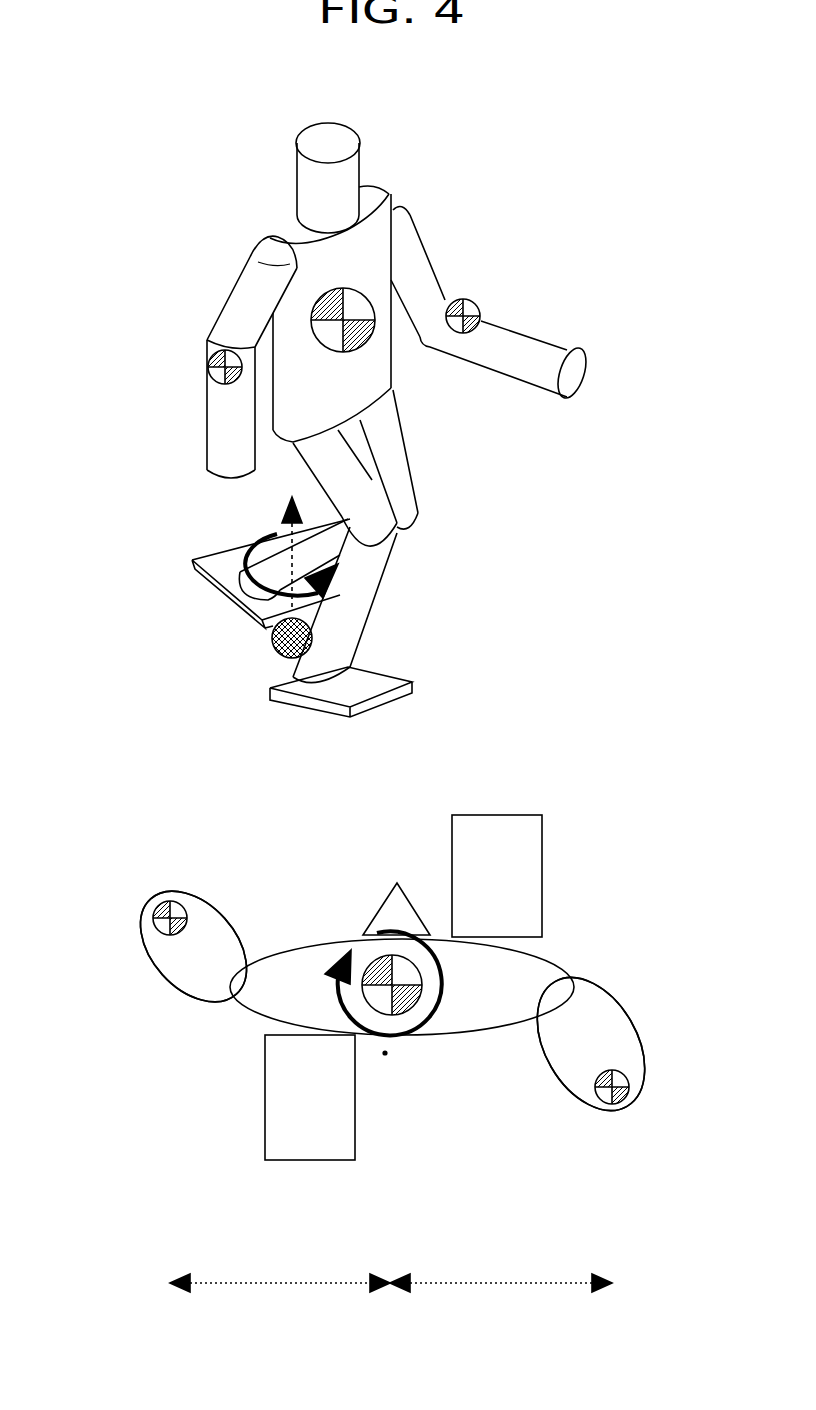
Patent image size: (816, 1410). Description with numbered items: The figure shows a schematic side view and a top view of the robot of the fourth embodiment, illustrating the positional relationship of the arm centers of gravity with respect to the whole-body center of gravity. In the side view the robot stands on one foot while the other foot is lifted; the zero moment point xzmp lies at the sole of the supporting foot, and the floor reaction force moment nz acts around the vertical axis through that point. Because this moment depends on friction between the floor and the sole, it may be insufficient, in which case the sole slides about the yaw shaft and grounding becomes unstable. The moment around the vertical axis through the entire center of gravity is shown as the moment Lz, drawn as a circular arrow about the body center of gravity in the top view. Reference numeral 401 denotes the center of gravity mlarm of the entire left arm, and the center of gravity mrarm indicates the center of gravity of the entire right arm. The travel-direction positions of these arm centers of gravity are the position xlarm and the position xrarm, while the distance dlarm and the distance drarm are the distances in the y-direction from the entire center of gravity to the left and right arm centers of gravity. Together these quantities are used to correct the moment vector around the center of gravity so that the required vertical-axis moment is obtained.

The center of gravity of the entire left arm 401 is at (470, 298).
The ZMP position xzmp is at (264, 649).
The floor reaction force moment around the vertical axis of ZMP nz is at (274, 551).
The travel direction position of the left arm center of gravity xlarm is at (170, 1348).
The center of gravity of the entire left arm mlarm is at (156, 954).
The travel direction position of the right arm center of gravity xrarm is at (612, 1348).
The center of gravity of the entire right arm mrarm is at (622, 1052).
The moment around the center of gravity of the vertical axis Lz is at (390, 1348).
The y-direction distance from the entire center of gravity to the left arm center of dlarm is at (280, 1305).
The y-direction distance from the entire center of gravity to the right arm center o drarm is at (501, 1305).